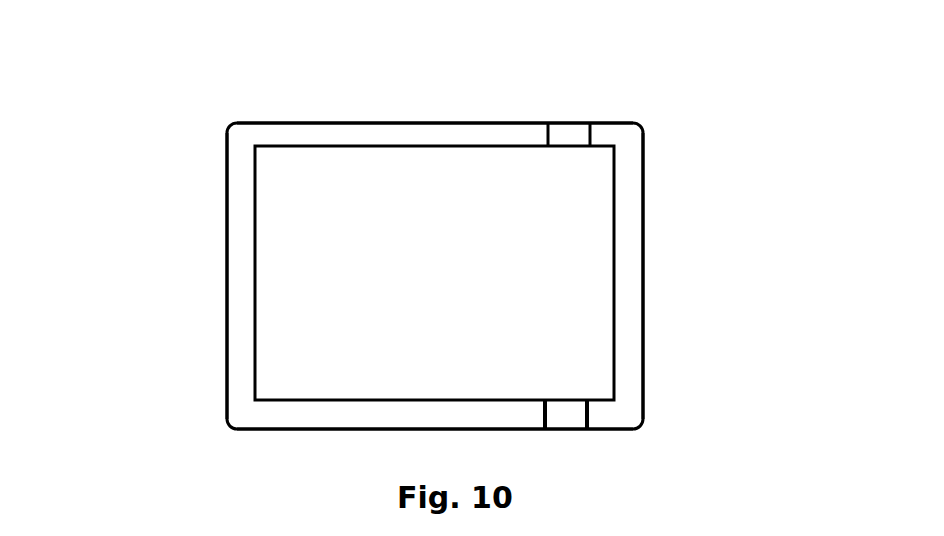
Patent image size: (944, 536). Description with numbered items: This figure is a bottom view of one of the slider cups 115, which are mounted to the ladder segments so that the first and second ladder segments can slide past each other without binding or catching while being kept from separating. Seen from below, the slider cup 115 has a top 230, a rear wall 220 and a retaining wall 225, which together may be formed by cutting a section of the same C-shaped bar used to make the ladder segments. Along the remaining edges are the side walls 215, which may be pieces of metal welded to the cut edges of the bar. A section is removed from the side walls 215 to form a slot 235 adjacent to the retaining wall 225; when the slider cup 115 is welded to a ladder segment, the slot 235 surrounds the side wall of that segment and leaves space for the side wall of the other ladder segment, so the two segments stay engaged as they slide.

The slider cup 115 is at (703, 246).
The side wall 215 is at (342, 138).
The rear wall 220 is at (234, 250).
The retaining wall 225 is at (636, 355).
The top 230 is at (508, 285).
The slot 235 is at (565, 137).